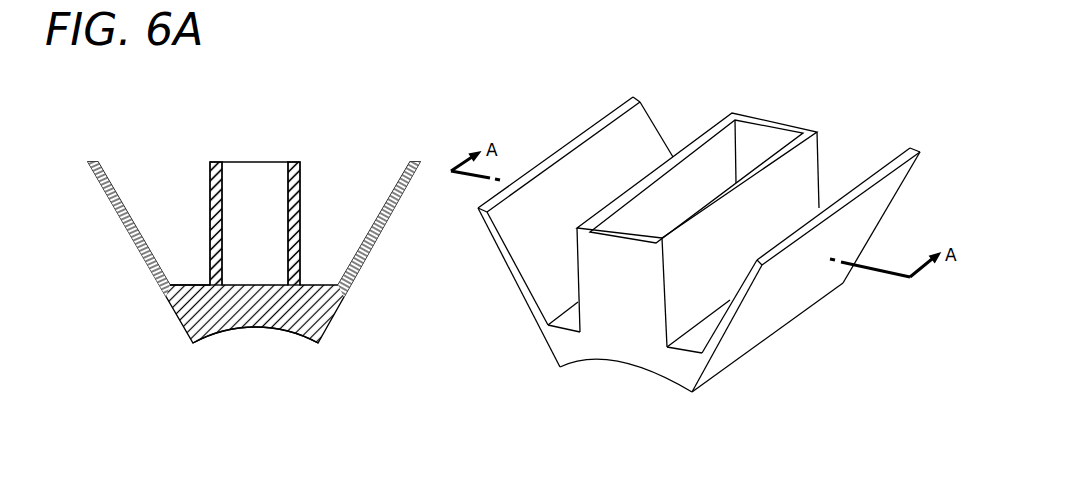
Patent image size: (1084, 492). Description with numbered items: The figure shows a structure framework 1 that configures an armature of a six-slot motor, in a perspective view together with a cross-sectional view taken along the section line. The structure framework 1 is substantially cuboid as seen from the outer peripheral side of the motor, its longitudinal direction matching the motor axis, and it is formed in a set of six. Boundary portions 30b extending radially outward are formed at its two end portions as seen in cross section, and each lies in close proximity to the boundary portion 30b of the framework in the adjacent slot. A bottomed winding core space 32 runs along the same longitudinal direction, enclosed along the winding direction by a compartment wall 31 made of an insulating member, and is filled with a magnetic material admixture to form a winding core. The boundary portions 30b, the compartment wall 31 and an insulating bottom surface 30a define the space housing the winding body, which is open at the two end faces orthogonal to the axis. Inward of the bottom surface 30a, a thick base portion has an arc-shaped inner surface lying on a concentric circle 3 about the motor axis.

The structure framework 1 is at (486, 296).
The concentric circle 3 is at (260, 330).
The bottom surface 30a is at (187, 282).
The boundary portion 30b is at (115, 190).
The compartment wall 31 is at (208, 208).
The winding core space 32 is at (257, 197).